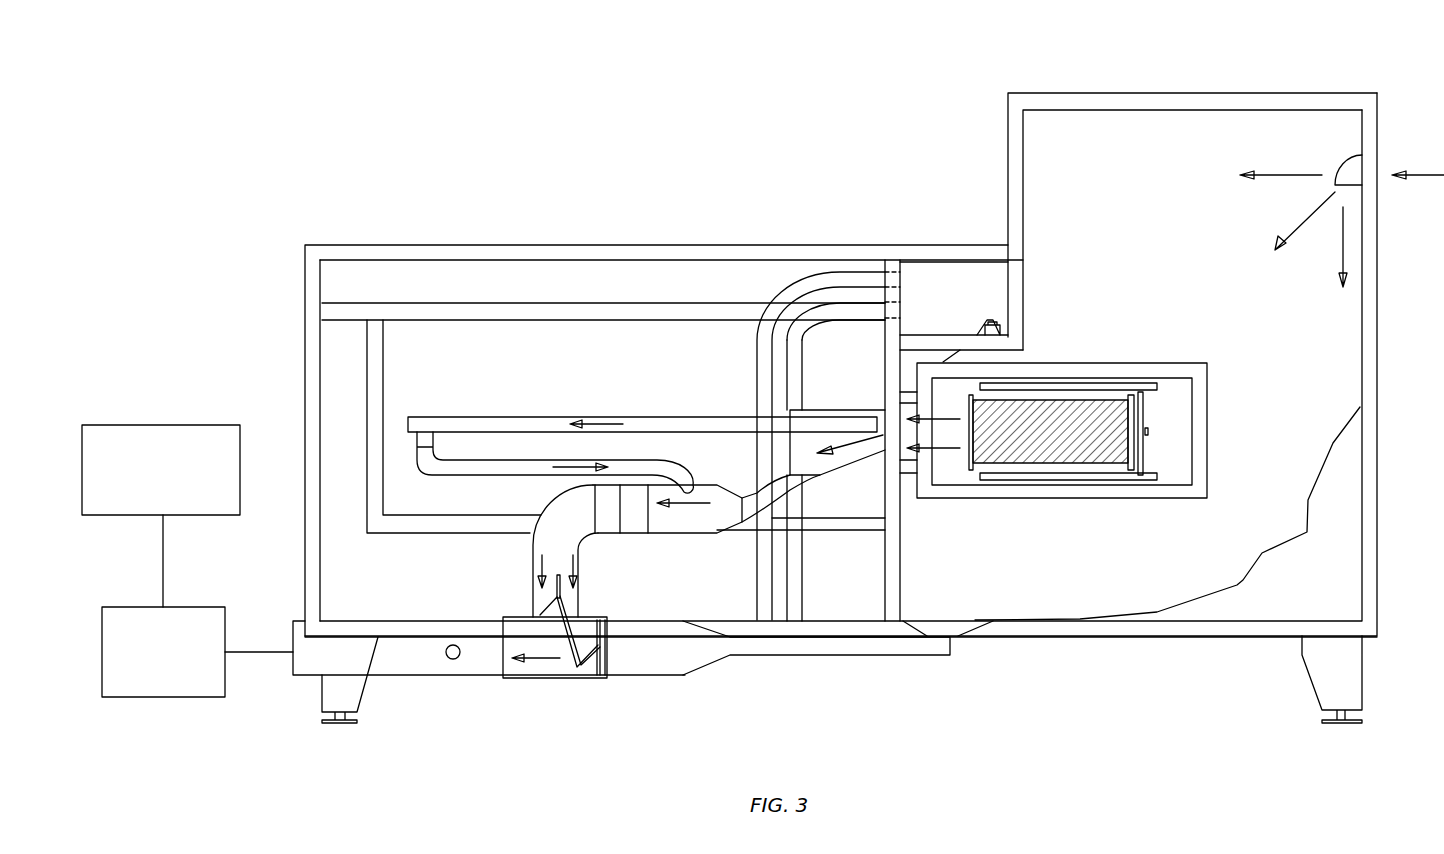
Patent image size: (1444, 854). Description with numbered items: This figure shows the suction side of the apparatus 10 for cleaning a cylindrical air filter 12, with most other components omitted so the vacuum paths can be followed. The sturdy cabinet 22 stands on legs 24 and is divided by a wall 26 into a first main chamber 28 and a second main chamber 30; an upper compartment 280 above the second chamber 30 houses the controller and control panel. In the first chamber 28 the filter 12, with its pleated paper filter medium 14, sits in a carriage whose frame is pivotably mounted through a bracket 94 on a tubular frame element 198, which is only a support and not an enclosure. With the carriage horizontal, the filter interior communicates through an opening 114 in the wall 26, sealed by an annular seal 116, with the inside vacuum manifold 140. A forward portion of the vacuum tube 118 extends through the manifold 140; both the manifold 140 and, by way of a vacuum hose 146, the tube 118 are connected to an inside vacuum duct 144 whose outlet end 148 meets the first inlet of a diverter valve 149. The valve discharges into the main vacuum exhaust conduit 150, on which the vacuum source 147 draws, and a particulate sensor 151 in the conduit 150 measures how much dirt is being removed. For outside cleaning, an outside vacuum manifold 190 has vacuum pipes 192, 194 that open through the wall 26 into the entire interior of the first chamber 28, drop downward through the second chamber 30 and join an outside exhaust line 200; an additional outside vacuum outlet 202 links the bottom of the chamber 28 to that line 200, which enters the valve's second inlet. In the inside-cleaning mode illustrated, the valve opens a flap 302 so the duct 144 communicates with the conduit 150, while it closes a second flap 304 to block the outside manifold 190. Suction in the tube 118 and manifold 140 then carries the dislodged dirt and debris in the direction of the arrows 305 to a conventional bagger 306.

The apparatus 10 is at (603, 170).
The cylindrical air filter 12 is at (1095, 465).
The pleated paper filter medium 14 is at (1017, 445).
The cabinet 22 is at (1105, 637).
The legs 24 is at (348, 700).
The wall 26 is at (902, 325).
The first main chamber 28 is at (1050, 143).
The second main chamber 30 is at (443, 335).
The bracket 94 is at (1040, 365).
The opening 114 is at (885, 490).
The annular seal 116 is at (905, 478).
The vacuum tube 118 is at (718, 415).
The inside vacuum manifold 140 is at (848, 408).
The inside vacuum duct 144 is at (672, 540).
The vacuum hose 146 is at (478, 457).
The vacuum source 147 is at (168, 698).
The outlet end 148 is at (528, 602).
The diverter valve 149 is at (557, 680).
The main vacuum exhaust conduit 150 is at (490, 677).
The particulate sensor 151 is at (453, 660).
The outside vacuum manifold 190 is at (763, 655).
The vacuum pipe 192 is at (802, 295).
The vacuum pipe 194 is at (870, 302).
The frame element 198 is at (1018, 295).
The outside exhaust line 200 is at (810, 648).
The outside vacuum outlet 202 is at (925, 615).
The upper compartment 280 is at (619, 272).
The flap 302 is at (557, 573).
The second flap 304 is at (597, 677).
The arrows 305 is at (603, 423).
The bagger 306 is at (165, 425).